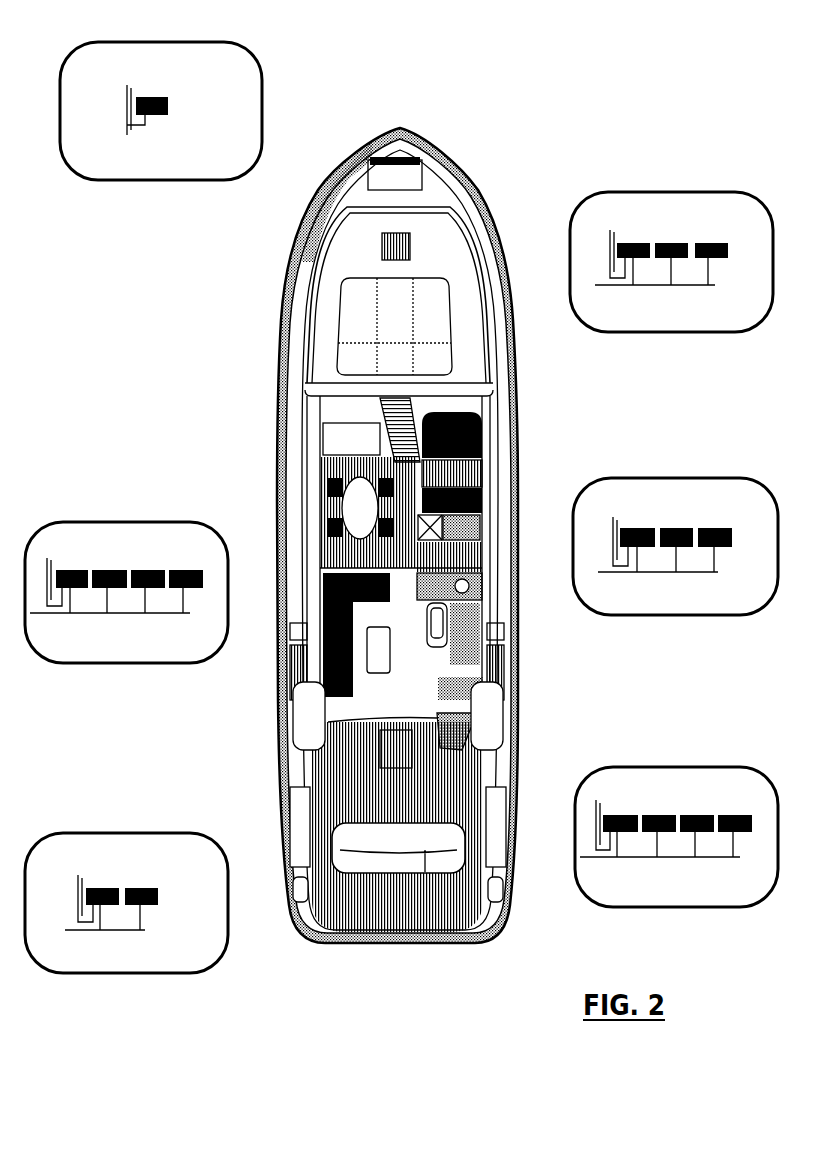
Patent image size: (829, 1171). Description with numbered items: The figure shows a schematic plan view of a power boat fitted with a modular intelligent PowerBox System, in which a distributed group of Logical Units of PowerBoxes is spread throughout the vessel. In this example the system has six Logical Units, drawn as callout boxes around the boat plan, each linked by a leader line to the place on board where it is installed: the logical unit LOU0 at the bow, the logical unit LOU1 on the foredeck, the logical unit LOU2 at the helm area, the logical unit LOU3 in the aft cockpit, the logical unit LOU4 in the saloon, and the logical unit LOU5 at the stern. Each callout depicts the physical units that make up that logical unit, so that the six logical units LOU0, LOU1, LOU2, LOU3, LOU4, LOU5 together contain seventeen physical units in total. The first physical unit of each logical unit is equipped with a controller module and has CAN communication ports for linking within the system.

The logical unit LOU0 is at (400, 176).
The logical unit LOU1 is at (470, 314).
The logical unit LOU2 is at (479, 487).
The logical unit LOU3 is at (465, 762).
The logical unit LOU4 is at (317, 588).
The logical unit LOU5 is at (328, 895).